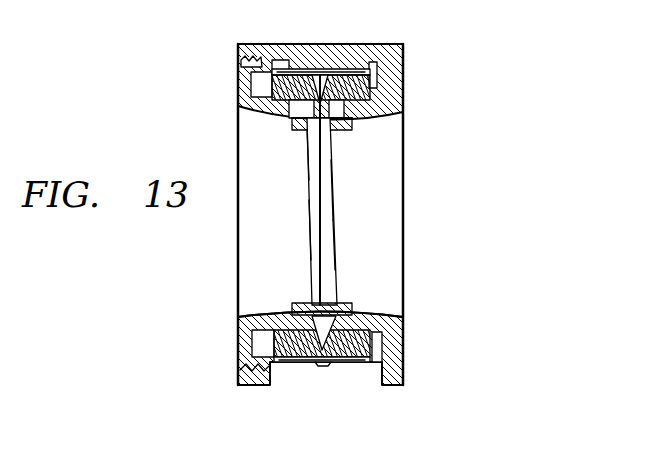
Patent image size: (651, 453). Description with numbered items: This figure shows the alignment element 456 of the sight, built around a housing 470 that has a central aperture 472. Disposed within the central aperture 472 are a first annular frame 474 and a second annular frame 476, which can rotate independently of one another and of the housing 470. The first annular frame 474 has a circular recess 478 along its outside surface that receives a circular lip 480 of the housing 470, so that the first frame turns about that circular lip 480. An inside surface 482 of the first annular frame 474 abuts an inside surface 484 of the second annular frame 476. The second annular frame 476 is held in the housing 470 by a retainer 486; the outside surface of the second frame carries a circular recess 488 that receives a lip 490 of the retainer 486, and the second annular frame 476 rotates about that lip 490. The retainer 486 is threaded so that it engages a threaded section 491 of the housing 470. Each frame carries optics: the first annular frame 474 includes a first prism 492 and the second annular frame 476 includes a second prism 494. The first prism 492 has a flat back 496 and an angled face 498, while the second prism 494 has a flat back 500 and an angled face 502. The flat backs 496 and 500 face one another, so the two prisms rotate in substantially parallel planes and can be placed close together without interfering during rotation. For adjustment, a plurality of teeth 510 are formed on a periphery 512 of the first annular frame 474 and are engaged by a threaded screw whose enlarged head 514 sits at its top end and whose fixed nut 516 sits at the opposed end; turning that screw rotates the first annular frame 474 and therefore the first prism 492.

The alignment element 456 is at (444, 268).
The housing 470 is at (405, 57).
The central aperture 472 is at (388, 160).
The first annular frame 474 is at (348, 362).
The second annular frame 476 is at (293, 365).
The circular recess 478 is at (342, 128).
The circular lip 480 is at (352, 128).
The inside surface 482 is at (328, 366).
The inside surface 484 is at (313, 365).
The retainer 486 is at (240, 350).
The circular recess 488 is at (291, 309).
The lip 490 is at (262, 306).
The threaded section 491 is at (245, 375).
The first prism 492 is at (328, 274).
The second prism 494 is at (310, 236).
The flat back 496 is at (323, 243).
The angled face 498 is at (334, 209).
The flat back 500 is at (325, 196).
The angled face 502 is at (307, 165).
The teeth 510 is at (355, 70).
The periphery 512 is at (385, 95).
The enlarged head 514 is at (286, 62).
The fixed nut 516 is at (256, 80).